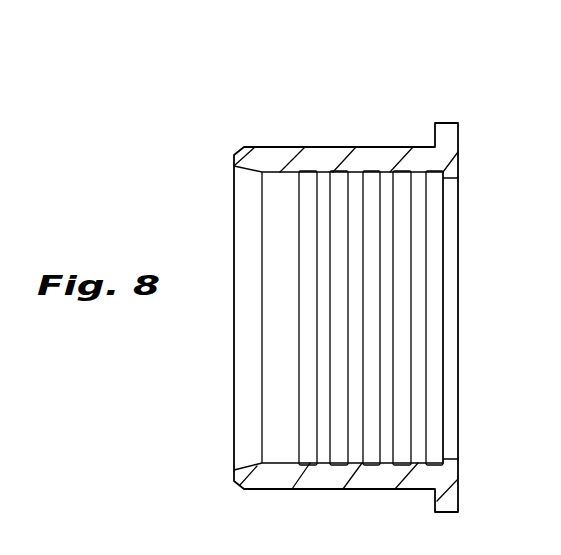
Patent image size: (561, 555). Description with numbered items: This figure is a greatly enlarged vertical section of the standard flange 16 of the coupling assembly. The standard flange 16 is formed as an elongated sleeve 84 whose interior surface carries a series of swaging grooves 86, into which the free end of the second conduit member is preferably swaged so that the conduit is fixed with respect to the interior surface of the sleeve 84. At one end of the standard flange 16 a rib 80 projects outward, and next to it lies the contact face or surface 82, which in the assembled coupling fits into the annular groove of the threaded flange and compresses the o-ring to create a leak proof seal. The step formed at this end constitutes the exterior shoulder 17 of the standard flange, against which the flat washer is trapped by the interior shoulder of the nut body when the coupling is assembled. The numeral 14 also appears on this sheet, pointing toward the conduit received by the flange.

The standard flange 16 is at (250, 123).
The sleeve 84 is at (298, 147).
The exterior shoulder 17 is at (434, 143).
The rib 80 is at (448, 128).
The contact face or surface 82 is at (458, 141).
The swaging grooves 86 is at (417, 325).
The hose 14 is at (2, 538).